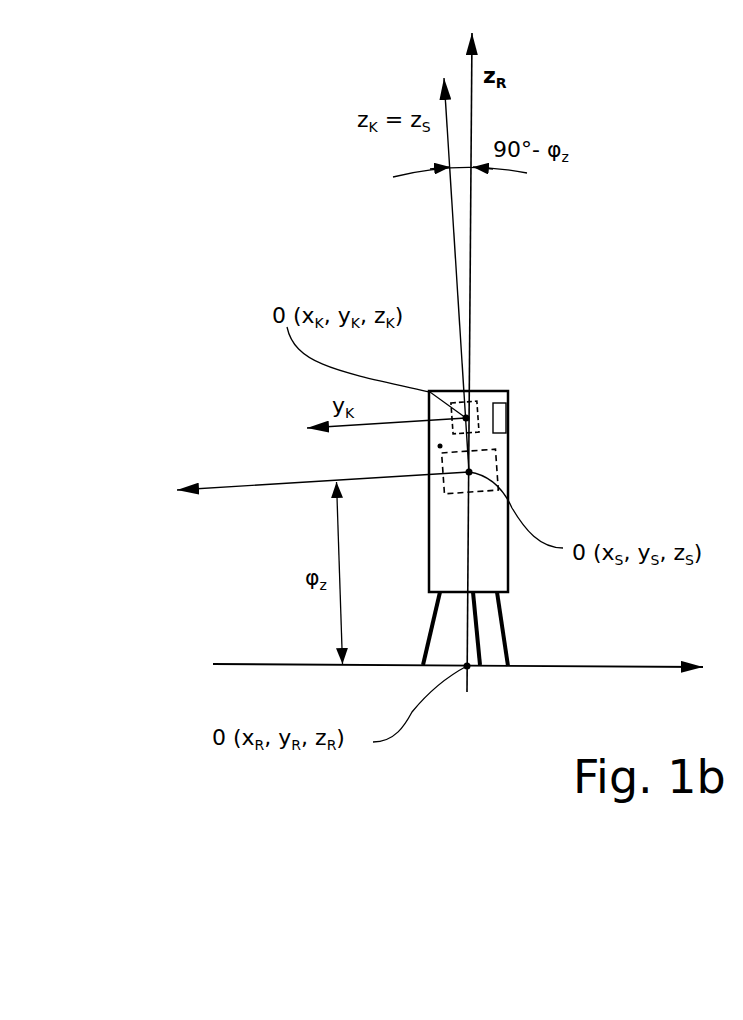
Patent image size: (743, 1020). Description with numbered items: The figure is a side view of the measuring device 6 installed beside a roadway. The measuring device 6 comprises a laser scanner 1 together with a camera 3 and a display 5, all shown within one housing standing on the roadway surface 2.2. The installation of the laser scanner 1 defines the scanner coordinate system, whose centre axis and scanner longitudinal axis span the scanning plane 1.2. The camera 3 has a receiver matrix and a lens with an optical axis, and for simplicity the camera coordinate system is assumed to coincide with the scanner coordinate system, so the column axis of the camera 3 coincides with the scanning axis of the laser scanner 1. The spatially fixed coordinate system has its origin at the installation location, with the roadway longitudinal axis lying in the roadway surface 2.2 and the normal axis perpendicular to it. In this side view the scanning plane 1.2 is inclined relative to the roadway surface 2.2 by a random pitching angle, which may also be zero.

The laser scanner 1 is at (493, 465).
The scanning plane 1.2 is at (275, 483).
The roadway surface 2.2 is at (272, 663).
The camera 3 is at (480, 403).
The display 5 is at (500, 420).
The measuring device 6 is at (507, 553).